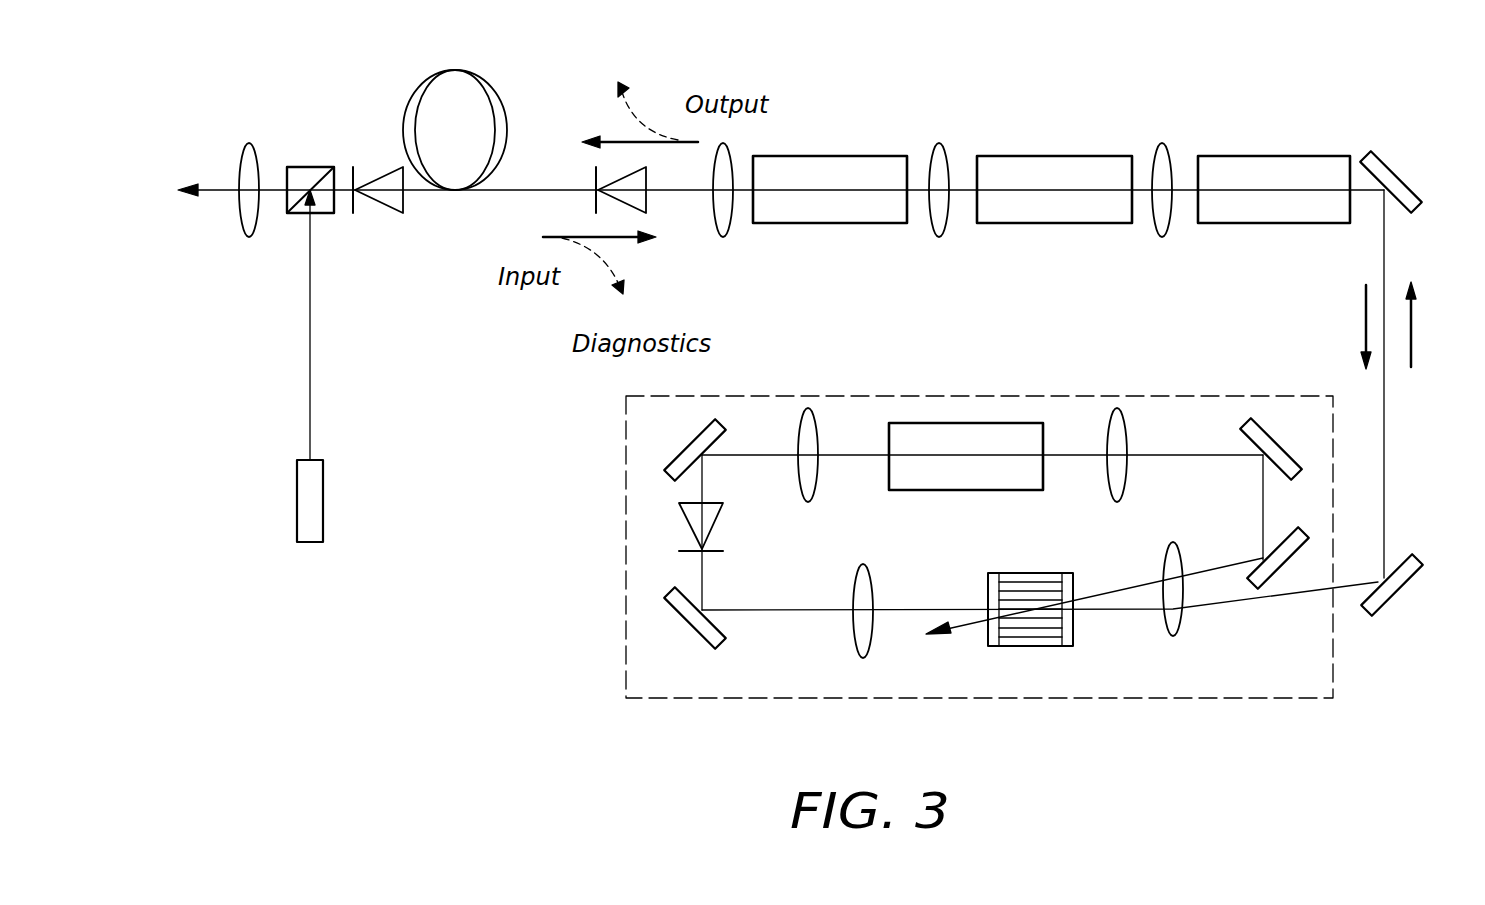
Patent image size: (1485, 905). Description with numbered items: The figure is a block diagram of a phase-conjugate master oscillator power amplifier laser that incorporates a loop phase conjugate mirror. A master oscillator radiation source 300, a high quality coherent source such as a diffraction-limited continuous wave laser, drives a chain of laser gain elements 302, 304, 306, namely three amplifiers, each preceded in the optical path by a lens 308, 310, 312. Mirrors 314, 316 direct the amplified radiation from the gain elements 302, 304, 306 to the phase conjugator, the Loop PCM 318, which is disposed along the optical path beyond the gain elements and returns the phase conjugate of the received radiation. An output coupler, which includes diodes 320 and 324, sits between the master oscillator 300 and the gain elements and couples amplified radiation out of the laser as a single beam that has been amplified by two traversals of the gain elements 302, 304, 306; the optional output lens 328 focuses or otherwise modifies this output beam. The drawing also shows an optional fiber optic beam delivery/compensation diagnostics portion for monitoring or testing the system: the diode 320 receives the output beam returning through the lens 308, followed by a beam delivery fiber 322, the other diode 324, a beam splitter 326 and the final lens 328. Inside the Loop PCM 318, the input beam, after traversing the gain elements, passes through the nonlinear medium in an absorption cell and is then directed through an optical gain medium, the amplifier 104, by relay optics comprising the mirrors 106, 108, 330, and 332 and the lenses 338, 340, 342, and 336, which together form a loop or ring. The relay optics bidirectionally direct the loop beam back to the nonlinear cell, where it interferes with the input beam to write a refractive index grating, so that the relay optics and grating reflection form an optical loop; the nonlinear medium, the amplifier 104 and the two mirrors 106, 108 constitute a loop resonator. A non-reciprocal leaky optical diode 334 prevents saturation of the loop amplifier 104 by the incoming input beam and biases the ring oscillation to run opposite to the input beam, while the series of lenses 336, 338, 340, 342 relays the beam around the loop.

The amplifier 104 is at (985, 490).
The mirror 106 is at (687, 633).
The mirror 108 is at (677, 453).
The master oscillator radiation source 300 is at (323, 485).
The laser gain element 302 is at (873, 155).
The laser gain element 304 is at (1097, 153).
The laser gain element 306 is at (1317, 153).
The lens 308 is at (715, 210).
The lens 310 is at (930, 208).
The lens 312 is at (1153, 210).
The mirror 314 is at (1387, 160).
The mirror 316 is at (1398, 592).
The Loop PCM 318 is at (988, 396).
The diode 320 is at (618, 177).
The beam delivery fiber 322 is at (458, 83).
The diode 324 is at (385, 210).
The beam splitter 326 is at (321, 165).
The output lens 328 is at (240, 168).
The mirror 330 is at (1277, 442).
The mirror 332 is at (1290, 565).
The non-reciprocal leaky optical diode 334 is at (687, 532).
The lens 336 is at (1163, 563).
The lens 338 is at (850, 633).
The lens 340 is at (817, 478).
The lens 342 is at (1127, 468).